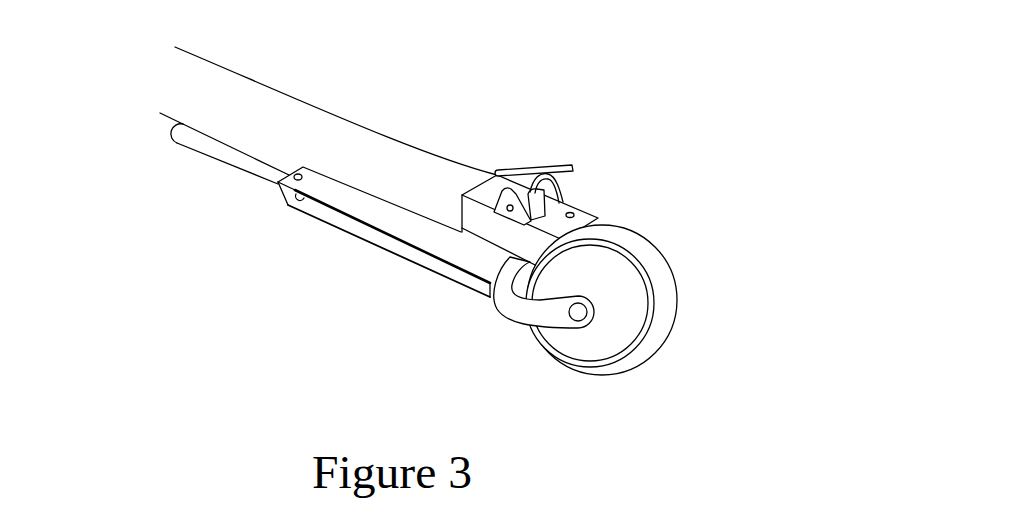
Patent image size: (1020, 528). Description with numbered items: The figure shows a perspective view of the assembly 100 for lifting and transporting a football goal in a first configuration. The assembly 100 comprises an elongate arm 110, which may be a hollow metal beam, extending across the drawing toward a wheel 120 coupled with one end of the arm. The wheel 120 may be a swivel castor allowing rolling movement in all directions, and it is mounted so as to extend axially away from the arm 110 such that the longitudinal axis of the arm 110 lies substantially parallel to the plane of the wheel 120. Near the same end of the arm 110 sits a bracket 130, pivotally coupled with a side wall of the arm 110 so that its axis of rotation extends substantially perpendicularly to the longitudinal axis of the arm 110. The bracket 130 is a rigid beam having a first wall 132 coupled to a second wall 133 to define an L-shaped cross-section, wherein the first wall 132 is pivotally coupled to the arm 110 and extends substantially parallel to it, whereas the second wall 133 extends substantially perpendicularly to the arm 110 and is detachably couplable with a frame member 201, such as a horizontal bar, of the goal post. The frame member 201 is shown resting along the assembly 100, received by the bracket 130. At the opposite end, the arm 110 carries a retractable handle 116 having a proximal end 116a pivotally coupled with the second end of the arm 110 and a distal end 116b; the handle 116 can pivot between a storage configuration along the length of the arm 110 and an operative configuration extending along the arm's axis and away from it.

The assembly 100 is at (536, 370).
The elongate arm 110 is at (364, 271).
The retractable handle 116 is at (243, 173).
The proximal end 116a is at (280, 204).
The distal end 116b is at (175, 142).
The wheel 120 is at (697, 319).
The bracket 130 is at (584, 190).
The first wall 132 is at (473, 228).
The second wall 133 is at (592, 219).
The frame member 201 is at (312, 105).